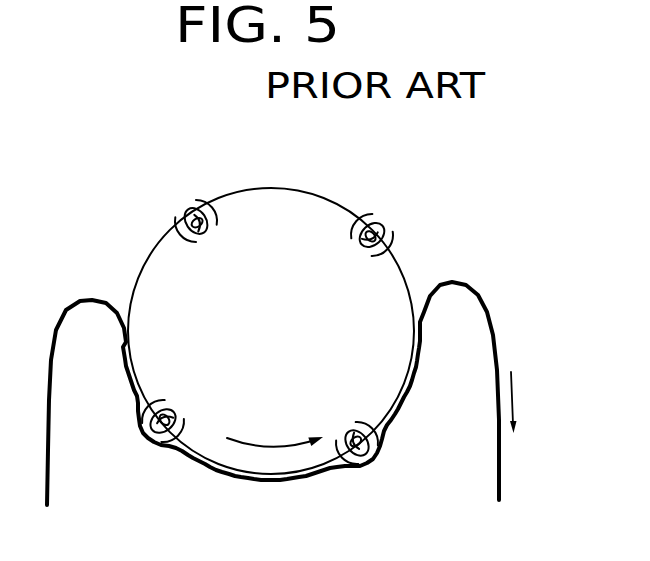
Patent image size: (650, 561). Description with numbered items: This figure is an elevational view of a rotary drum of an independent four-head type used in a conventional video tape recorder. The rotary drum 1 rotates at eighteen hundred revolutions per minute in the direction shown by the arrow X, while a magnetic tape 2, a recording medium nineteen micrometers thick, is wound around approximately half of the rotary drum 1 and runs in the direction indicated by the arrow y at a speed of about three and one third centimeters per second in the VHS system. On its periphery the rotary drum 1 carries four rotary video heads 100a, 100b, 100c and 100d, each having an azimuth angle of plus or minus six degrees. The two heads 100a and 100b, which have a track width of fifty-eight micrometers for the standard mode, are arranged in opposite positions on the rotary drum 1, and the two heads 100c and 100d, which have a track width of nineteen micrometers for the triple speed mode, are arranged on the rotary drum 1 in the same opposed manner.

The rotary drum 1 is at (328, 205).
The magnetic tape 2 is at (490, 315).
The rotary video head 100a is at (220, 198).
The rotary video head 100b is at (352, 410).
The rotary video head 100c is at (168, 404).
The rotary video head 100d is at (372, 256).